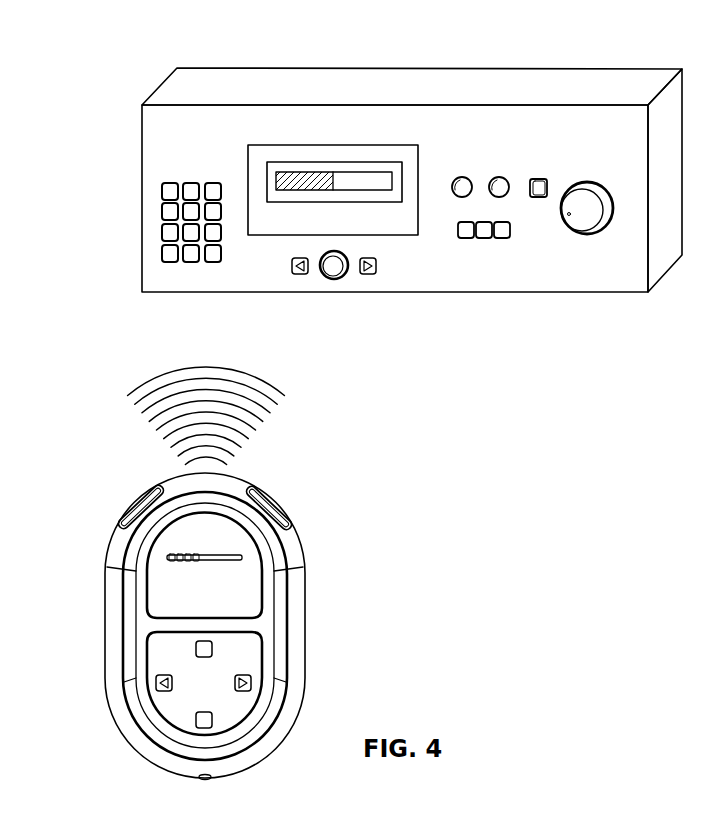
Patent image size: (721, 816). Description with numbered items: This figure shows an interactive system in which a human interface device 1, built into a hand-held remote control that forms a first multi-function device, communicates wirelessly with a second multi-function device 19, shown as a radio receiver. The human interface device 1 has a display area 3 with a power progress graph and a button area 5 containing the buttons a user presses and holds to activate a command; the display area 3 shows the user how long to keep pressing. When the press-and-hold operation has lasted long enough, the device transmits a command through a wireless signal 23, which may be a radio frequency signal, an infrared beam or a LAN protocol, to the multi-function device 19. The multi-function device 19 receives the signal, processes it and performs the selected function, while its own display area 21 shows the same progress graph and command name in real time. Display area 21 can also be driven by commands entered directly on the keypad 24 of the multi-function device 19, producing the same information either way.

The second multi-function device 19 is at (124, 203).
The display area 21 is at (354, 130).
The keypad 24 is at (150, 252).
The wireless signal 23 is at (140, 439).
The human interface device 1 is at (97, 531).
The display area 3 is at (278, 556).
The button area 5 is at (276, 668).